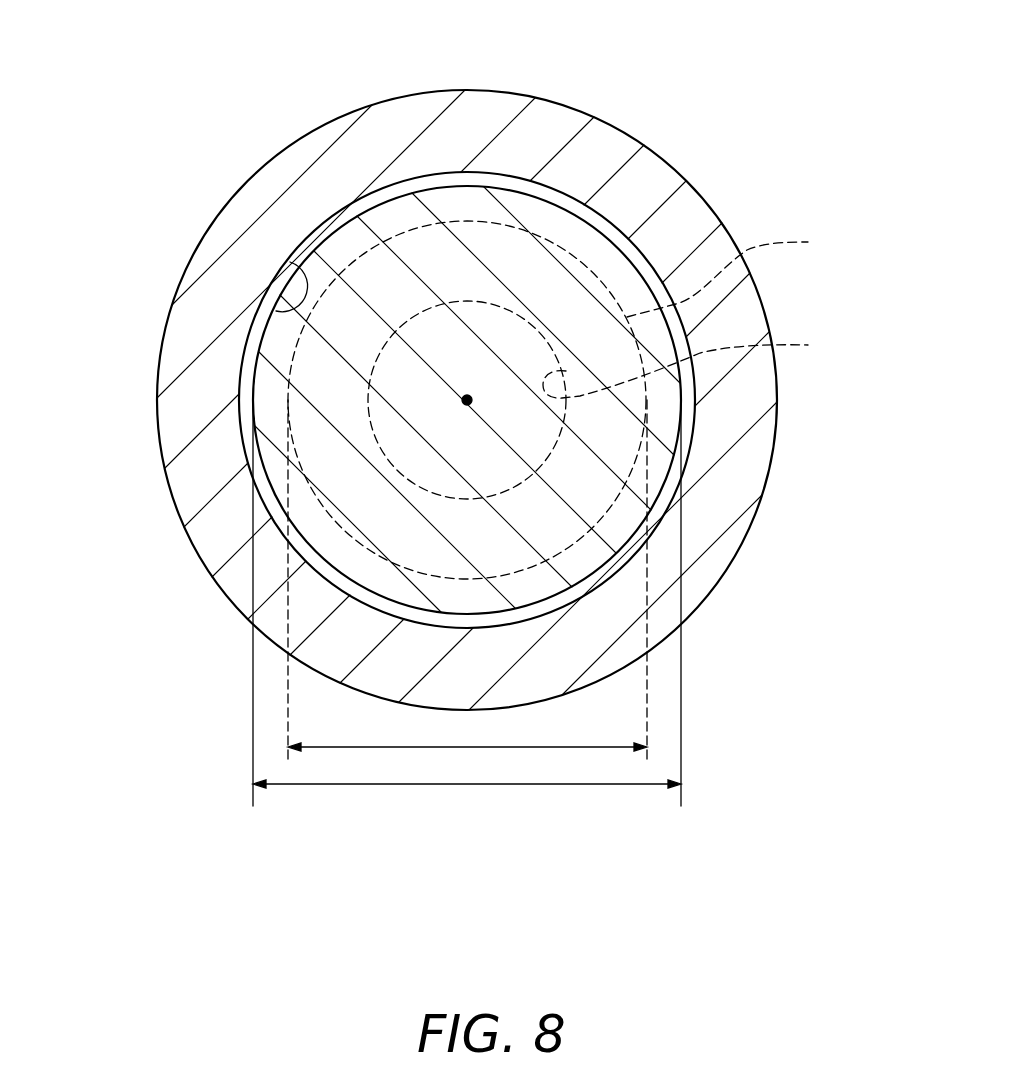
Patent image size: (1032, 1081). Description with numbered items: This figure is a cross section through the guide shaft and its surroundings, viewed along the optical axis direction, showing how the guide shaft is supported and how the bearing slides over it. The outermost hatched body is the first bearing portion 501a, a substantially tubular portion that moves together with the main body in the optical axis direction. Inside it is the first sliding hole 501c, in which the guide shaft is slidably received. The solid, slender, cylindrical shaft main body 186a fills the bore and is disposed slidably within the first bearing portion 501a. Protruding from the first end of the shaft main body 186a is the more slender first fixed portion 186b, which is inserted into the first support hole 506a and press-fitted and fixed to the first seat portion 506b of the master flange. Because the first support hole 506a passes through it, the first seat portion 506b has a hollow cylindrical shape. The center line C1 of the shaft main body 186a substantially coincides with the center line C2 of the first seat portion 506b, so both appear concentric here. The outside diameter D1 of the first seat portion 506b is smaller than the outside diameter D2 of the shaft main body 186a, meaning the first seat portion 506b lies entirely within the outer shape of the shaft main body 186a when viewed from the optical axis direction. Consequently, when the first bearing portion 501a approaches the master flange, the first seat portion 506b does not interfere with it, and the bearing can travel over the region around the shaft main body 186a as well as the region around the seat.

The first bearing portion 501a is at (278, 183).
The first sliding hole 501c is at (294, 312).
The shaft main body 186a is at (597, 252).
The first fixed portion 186b is at (510, 292).
The first support hole 506a is at (718, 361).
The first seat portion 506b is at (591, 399).
The center line of the shaft main body C1 is at (468, 396).
The center line of the first seat portion C2 is at (467, 400).
The outside diameter of the first seat portion D1 is at (467, 581).
The outside diameter of the shaft main body D2 is at (467, 603).